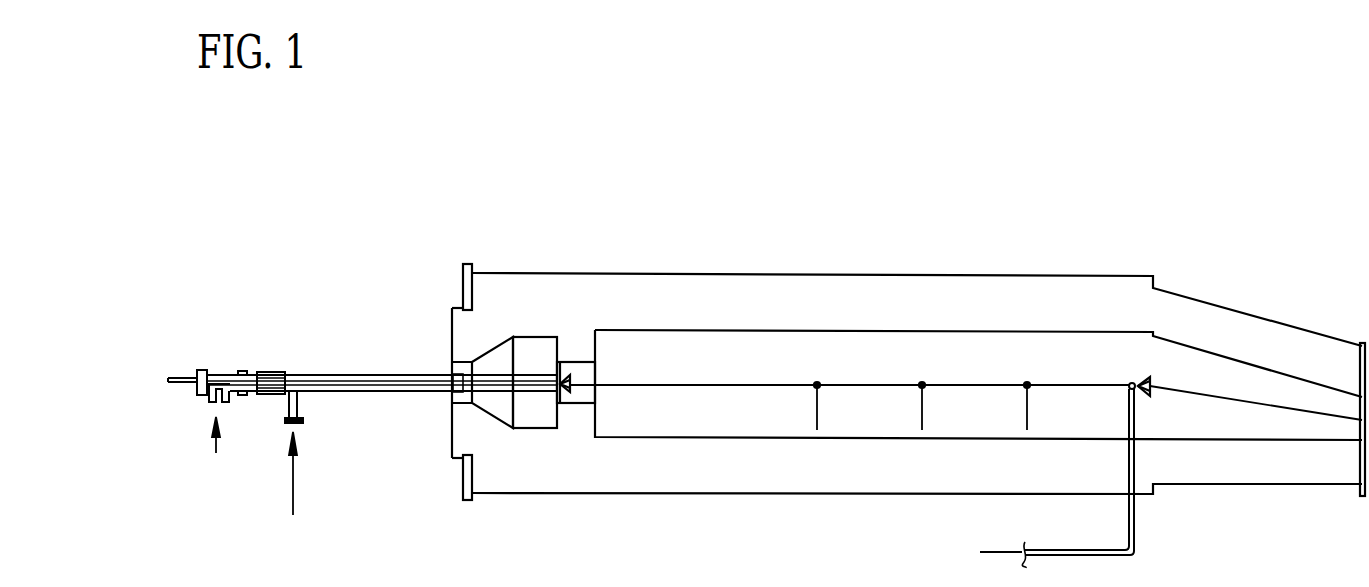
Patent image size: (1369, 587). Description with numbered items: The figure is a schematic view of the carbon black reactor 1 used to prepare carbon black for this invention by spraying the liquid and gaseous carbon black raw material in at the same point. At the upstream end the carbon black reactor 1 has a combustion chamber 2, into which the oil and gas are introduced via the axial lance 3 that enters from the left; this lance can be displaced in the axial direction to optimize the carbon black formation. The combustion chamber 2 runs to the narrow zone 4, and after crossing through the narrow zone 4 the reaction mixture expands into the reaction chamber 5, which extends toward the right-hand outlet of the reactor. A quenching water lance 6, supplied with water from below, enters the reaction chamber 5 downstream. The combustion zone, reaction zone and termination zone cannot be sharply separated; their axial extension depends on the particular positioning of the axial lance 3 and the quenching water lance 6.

The carbon black reactor 1 is at (1072, 310).
The combustion chamber 2 is at (525, 418).
The axial lance 3 is at (497, 372).
The narrow zone 4 is at (578, 397).
The reaction chamber 5 is at (798, 410).
The quenching water lance 6 is at (1133, 510).